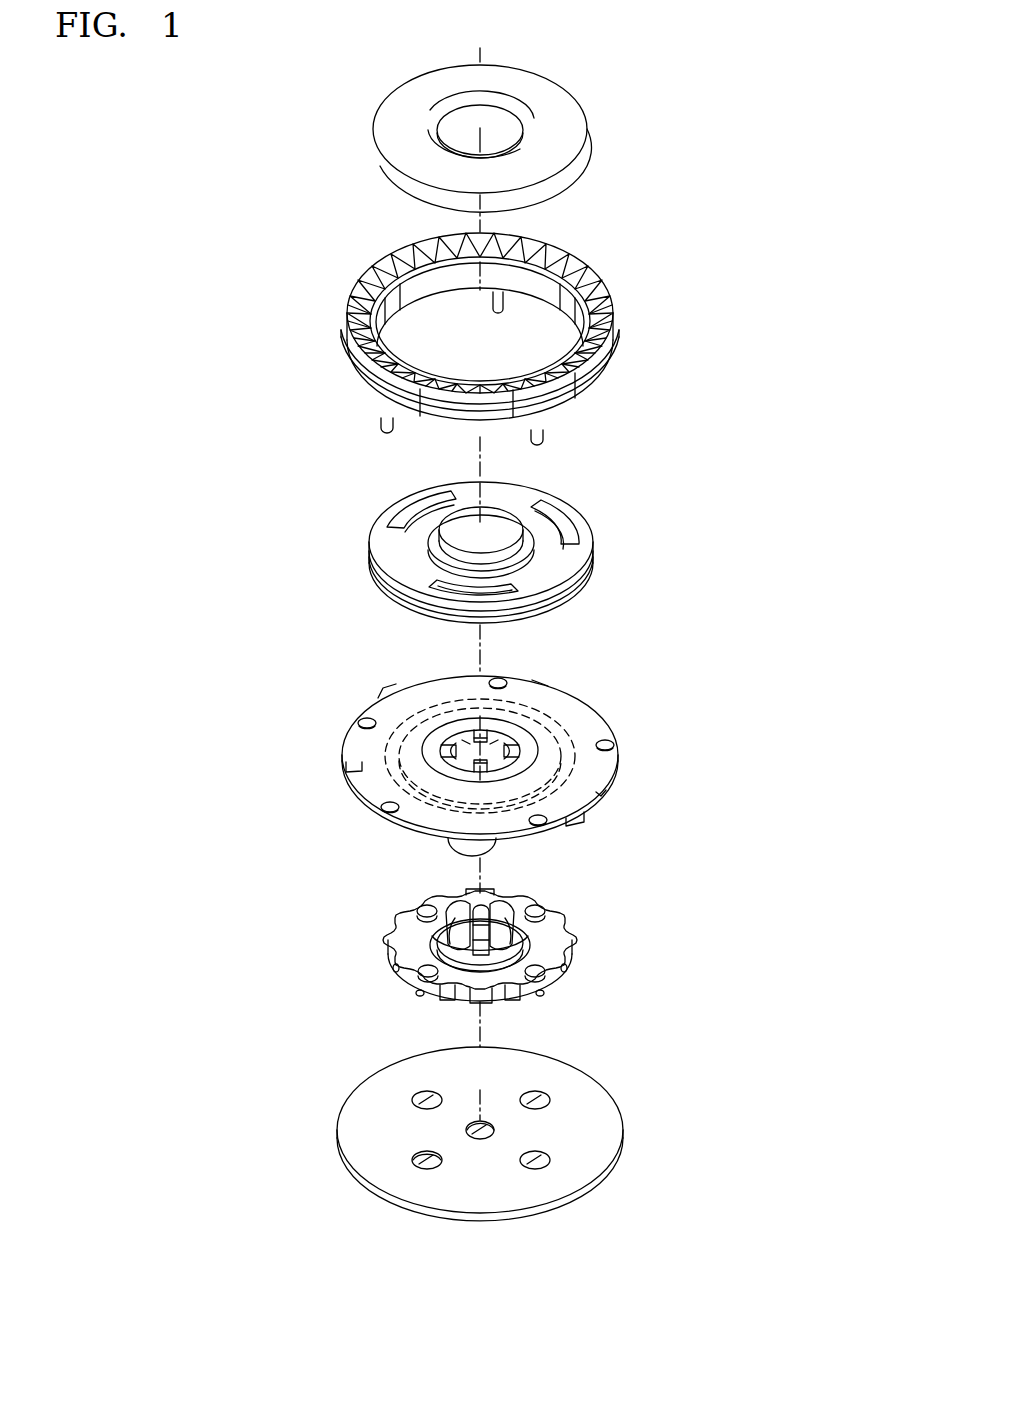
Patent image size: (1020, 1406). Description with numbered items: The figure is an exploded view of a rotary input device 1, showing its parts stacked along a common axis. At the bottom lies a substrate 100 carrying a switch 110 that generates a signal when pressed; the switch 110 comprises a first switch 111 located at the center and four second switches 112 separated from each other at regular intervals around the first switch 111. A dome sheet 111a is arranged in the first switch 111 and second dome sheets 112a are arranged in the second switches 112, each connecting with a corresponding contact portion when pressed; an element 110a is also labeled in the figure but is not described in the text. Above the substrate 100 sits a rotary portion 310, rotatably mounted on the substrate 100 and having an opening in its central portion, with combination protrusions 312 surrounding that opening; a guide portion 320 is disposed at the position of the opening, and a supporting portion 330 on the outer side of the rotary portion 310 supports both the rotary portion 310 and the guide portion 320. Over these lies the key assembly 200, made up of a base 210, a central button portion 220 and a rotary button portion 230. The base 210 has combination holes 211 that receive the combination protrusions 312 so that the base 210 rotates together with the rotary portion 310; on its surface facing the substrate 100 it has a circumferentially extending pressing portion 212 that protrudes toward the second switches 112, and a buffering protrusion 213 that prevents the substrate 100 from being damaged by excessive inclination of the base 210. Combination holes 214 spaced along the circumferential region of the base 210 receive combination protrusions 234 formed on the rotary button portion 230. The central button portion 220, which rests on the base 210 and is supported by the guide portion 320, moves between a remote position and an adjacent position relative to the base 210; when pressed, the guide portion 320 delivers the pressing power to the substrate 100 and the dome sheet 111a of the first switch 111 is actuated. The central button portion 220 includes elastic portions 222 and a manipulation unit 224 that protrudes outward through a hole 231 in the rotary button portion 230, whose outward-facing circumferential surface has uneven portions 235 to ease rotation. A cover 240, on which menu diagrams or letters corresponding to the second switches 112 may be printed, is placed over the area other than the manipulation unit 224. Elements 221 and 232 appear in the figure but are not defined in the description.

The rotary input device 1 is at (243, 208).
The substrate 100 is at (491, 1158).
The switch 110 is at (493, 1263).
The hole edges 110a is at (655, 1021).
The first switch 111 is at (474, 1160).
The dome sheet 111a is at (494, 1131).
The second switches 112 is at (408, 1180).
The second dome sheets 112a is at (424, 1152).
The key assembly 200 is at (757, 131).
The base 210 is at (535, 755).
The combination holes 211 is at (496, 748).
The pressing portion 212 is at (563, 733).
The buffering protrusion 213 is at (467, 843).
The combination holes 214 is at (365, 720).
The central button portion 220 is at (521, 544).
The outer flange 221 is at (358, 572).
The elastic portions 222 is at (567, 545).
The manipulation unit 224 is at (488, 517).
The rotary button portion 230 is at (530, 327).
The hole 231 is at (531, 318).
The inner wall 232 is at (566, 302).
The combination protrusions 234 is at (383, 423).
The uneven portions 235 is at (380, 274).
The cover 240 is at (561, 134).
The rotary portion 310 is at (465, 943).
The combination protrusions 312 is at (466, 896).
The guide portion 320 is at (562, 940).
The supporting portion 330 is at (567, 962).